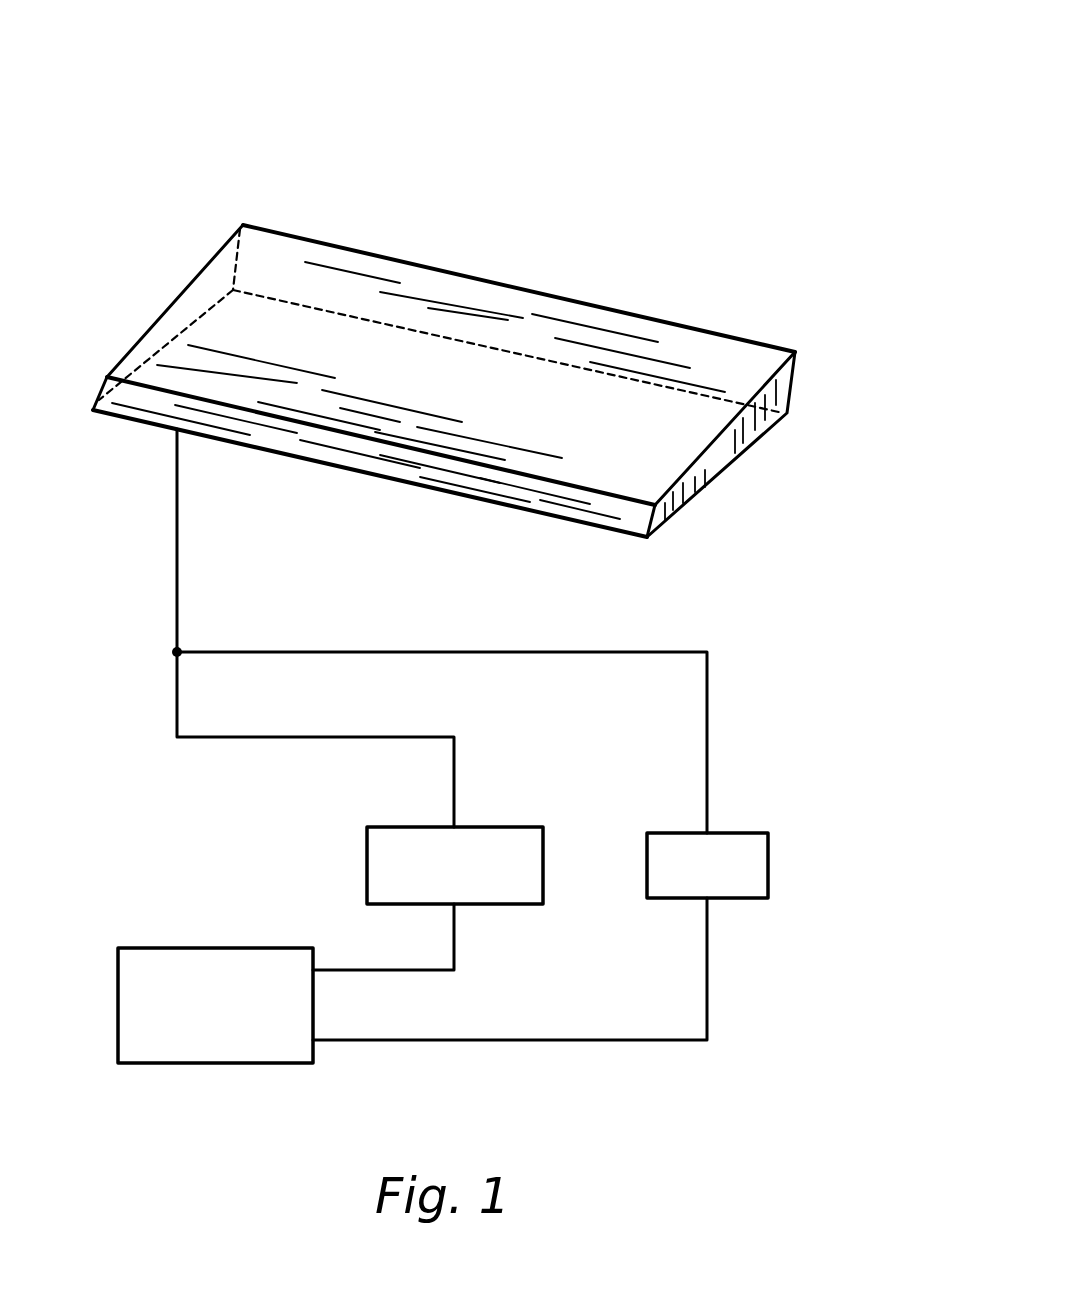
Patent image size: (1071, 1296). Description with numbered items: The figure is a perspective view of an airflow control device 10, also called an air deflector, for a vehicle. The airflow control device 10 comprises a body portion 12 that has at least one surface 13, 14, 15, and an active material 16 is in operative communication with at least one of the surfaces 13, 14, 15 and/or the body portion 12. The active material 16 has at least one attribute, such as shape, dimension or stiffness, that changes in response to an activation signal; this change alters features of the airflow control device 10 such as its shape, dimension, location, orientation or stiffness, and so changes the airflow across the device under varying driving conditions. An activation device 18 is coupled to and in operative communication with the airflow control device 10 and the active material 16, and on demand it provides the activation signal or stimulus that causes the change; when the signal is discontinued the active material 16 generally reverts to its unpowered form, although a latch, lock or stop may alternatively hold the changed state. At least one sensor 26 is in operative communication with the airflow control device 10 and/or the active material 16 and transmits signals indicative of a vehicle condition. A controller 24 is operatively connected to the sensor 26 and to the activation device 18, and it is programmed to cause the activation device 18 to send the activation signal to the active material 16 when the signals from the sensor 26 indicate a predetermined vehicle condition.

The airflow control device 10 is at (593, 148).
The body portion 12 is at (791, 392).
The surface 13 is at (300, 329).
The surface 14 is at (720, 455).
The surface 15 is at (383, 466).
The active material 16 is at (563, 335).
The activation device 18 is at (495, 827).
The controller 24 is at (192, 948).
The sensor 26 is at (770, 853).